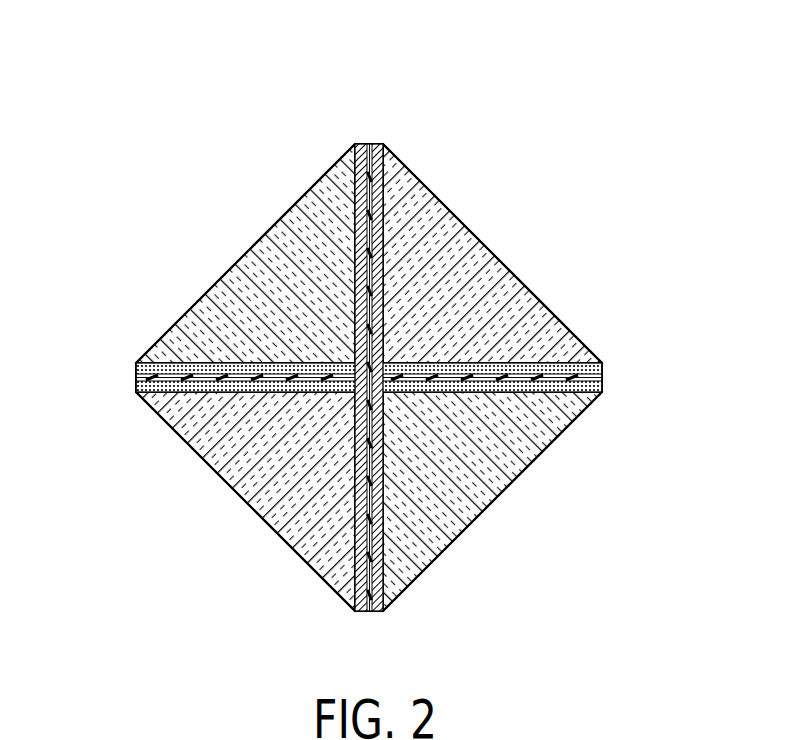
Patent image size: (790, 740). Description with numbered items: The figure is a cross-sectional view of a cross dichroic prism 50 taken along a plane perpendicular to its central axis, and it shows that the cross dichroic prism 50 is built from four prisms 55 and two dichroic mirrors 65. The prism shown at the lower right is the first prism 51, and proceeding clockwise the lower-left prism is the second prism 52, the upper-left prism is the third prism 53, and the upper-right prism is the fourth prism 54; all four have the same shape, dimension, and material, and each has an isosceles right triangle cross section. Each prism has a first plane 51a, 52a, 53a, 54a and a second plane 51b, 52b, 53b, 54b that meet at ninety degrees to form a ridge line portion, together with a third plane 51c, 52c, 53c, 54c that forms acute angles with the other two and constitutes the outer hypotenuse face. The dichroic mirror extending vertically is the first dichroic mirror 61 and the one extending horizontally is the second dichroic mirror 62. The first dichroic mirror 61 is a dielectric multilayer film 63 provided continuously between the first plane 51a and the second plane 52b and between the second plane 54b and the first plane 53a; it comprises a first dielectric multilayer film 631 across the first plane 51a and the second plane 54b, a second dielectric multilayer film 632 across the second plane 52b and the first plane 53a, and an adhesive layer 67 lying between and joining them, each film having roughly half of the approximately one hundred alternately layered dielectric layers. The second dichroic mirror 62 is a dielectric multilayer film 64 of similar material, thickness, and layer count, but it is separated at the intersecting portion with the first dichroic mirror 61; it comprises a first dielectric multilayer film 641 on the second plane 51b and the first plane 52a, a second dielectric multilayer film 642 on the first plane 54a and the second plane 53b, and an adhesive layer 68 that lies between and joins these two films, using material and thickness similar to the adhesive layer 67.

The cross dichroic prism 50 is at (349, 125).
The first prism 51 is at (470, 508).
The first plane 51a is at (386, 608).
The second plane 51b is at (596, 394).
The third plane 51c is at (452, 545).
The second prism 52 is at (262, 515).
The first plane 52a is at (165, 394).
The second plane 52b is at (354, 608).
The third plane 52c is at (303, 560).
The third prism 53 is at (213, 287).
The first plane 53a is at (357, 170).
The second plane 53b is at (155, 362).
The third plane 53c is at (182, 318).
The fourth prism 54 is at (476, 265).
The first plane 54a is at (594, 362).
The second plane 54b is at (386, 178).
The third plane 54c is at (563, 323).
The prism 55 is at (357, 377).
The first dichroic mirror 61 is at (400, 215).
The second dichroic mirror 62 is at (500, 350).
The dichroic mirror 65 is at (500, 252).
The dielectric multilayer film 63 is at (273, 372).
The first dielectric multilayer film 631 is at (356, 182).
The second dielectric multilayer film 632 is at (358, 214).
The dielectric multilayer film 64 is at (374, 449).
The first dielectric multilayer film 641 is at (178, 394).
The second dielectric multilayer film 642 is at (208, 393).
The adhesive layer 67 is at (370, 146).
The adhesive layer 68 is at (137, 379).